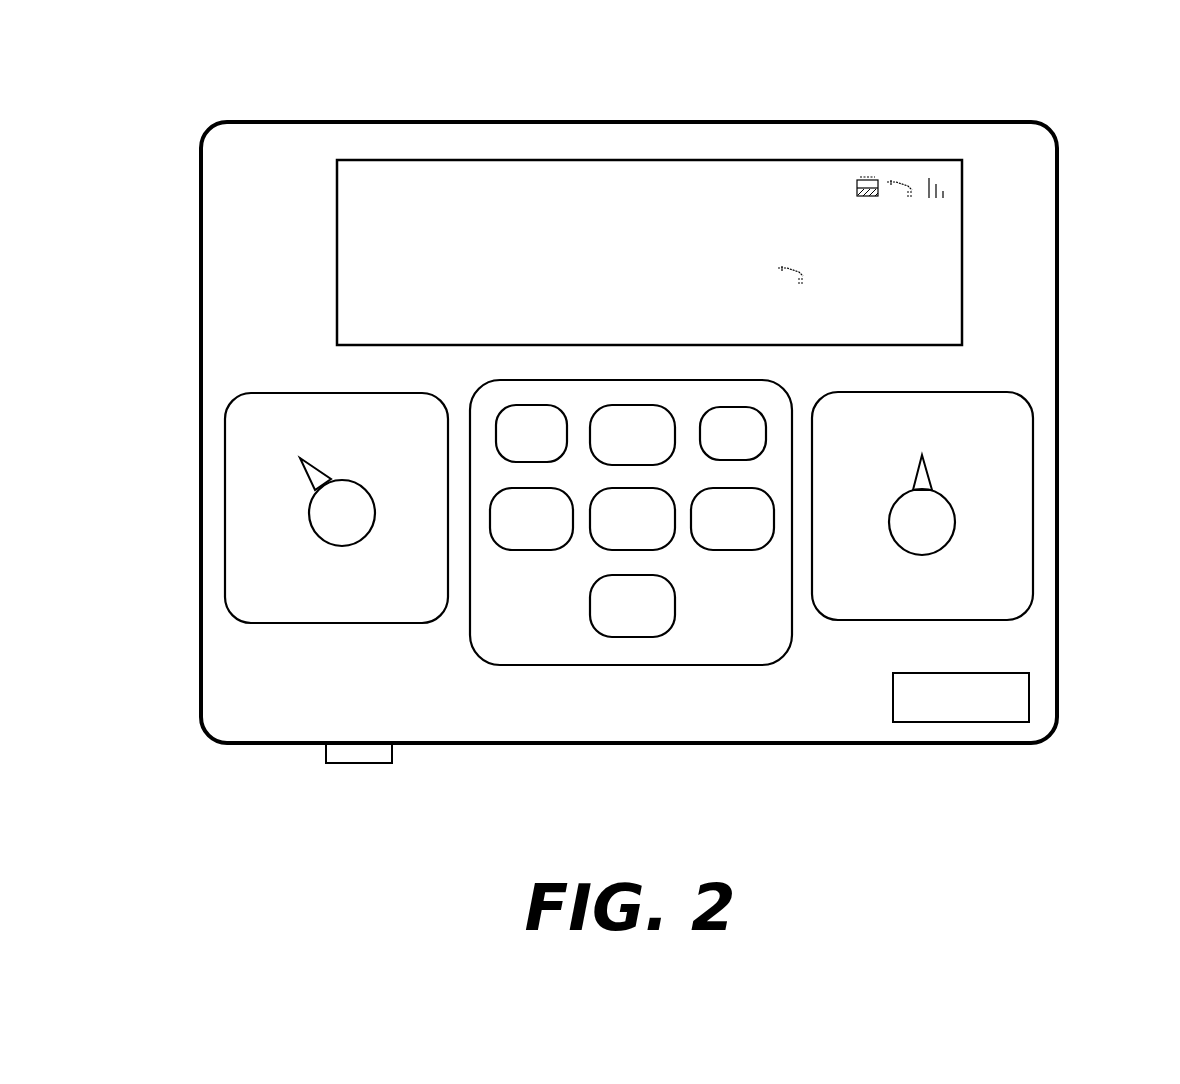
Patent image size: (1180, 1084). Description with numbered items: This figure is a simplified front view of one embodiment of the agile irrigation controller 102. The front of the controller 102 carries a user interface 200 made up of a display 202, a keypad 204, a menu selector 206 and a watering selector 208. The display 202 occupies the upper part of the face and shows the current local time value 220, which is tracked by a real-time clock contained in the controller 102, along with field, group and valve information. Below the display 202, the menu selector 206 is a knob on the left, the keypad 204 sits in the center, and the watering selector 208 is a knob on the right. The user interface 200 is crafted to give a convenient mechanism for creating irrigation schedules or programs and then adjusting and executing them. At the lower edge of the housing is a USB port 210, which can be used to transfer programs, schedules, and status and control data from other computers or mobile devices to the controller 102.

The agile irrigation controller 102 is at (1100, 121).
The user interface 200 is at (1058, 247).
The display 202 is at (745, 217).
The keypad 204 is at (650, 665).
The menu selector 206 is at (236, 463).
The watering selector 208 is at (1030, 490).
The USB port 210 is at (358, 766).
The current local time value 220 is at (765, 187).